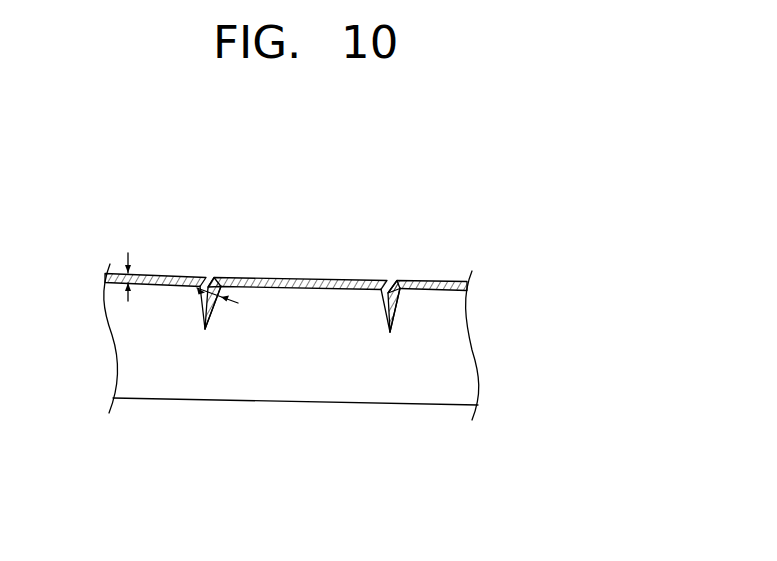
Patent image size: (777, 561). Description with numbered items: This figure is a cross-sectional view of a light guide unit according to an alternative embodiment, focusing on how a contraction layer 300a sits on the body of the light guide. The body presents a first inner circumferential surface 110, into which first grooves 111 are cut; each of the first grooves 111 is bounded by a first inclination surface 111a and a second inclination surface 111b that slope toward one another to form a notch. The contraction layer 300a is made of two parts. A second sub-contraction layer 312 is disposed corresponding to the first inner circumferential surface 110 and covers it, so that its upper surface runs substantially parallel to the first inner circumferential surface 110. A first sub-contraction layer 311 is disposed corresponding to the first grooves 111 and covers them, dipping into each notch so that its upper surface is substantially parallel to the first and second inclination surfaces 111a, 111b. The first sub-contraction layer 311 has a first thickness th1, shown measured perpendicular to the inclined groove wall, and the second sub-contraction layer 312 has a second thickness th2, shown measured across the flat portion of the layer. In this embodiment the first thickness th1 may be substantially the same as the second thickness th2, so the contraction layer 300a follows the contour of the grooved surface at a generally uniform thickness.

The first inner circumferential surface 110 is at (292, 352).
The first grooves 111 is at (274, 388).
The first inclination surface 111a is at (216, 304).
The second inclination surface 111b is at (202, 303).
The contraction layer 300a is at (253, 251).
The first sub-contraction layer 311 is at (214, 277).
The second sub-contraction layer 312 is at (157, 274).
The first thickness th1 is at (220, 278).
The second thickness th2 is at (105, 275).